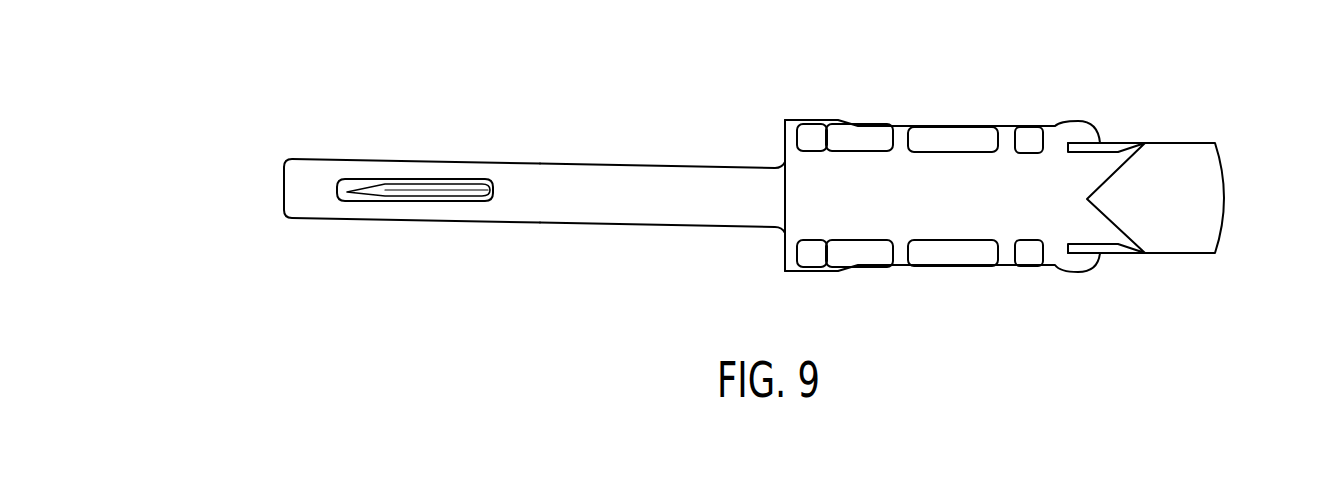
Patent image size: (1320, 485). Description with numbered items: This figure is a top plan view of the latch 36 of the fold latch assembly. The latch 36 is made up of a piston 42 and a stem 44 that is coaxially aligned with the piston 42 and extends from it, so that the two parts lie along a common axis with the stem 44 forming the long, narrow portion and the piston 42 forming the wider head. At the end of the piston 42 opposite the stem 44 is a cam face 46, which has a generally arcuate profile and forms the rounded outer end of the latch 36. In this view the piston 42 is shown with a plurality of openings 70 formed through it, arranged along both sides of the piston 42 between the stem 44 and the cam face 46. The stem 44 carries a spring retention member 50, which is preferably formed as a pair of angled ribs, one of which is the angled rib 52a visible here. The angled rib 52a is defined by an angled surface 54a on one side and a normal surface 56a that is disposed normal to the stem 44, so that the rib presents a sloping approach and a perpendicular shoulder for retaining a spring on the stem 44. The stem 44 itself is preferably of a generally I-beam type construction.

The latch 36 is at (615, 322).
The piston 42 is at (1090, 110).
The stem 44 is at (628, 148).
The cam face 46 is at (1233, 196).
The spring retention member 50 is at (396, 135).
The angled rib 52a is at (378, 187).
The angled surface 54a is at (352, 196).
The normal surface 56a is at (493, 191).
The openings 70 is at (856, 133).